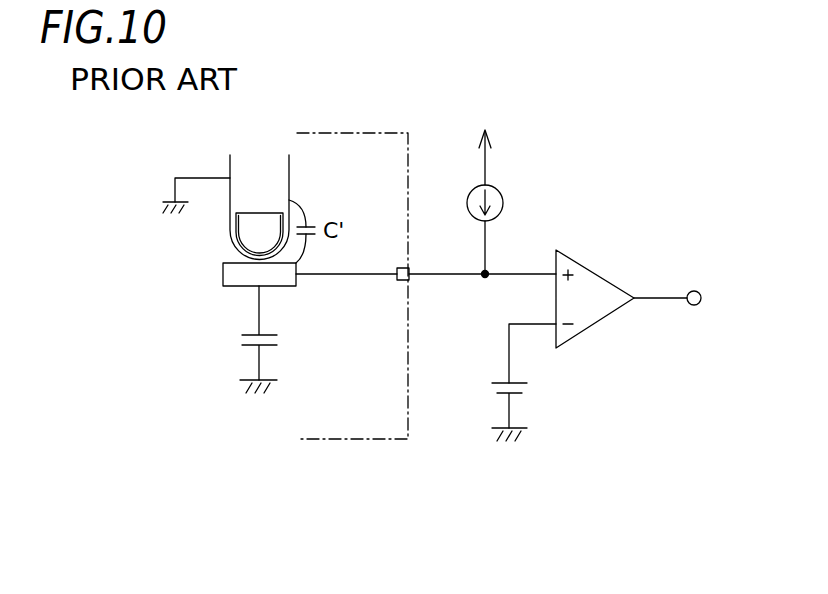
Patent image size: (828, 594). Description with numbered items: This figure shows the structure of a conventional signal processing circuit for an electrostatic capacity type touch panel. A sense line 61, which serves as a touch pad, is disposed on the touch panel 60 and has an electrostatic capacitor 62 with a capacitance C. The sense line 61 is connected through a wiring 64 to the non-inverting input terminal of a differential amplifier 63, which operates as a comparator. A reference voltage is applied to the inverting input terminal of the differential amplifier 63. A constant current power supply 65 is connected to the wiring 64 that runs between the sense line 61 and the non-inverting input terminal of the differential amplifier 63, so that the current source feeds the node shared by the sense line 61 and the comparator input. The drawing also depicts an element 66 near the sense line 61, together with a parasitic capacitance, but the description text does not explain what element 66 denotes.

The touch panel 60 is at (347, 135).
The sense line 61 is at (223, 272).
The electrostatic capacitor 62 is at (237, 340).
The differential amplifier 63 is at (605, 287).
The wiring 64 is at (442, 276).
The constant current power supply 65 is at (510, 200).
The container 66 is at (289, 178).